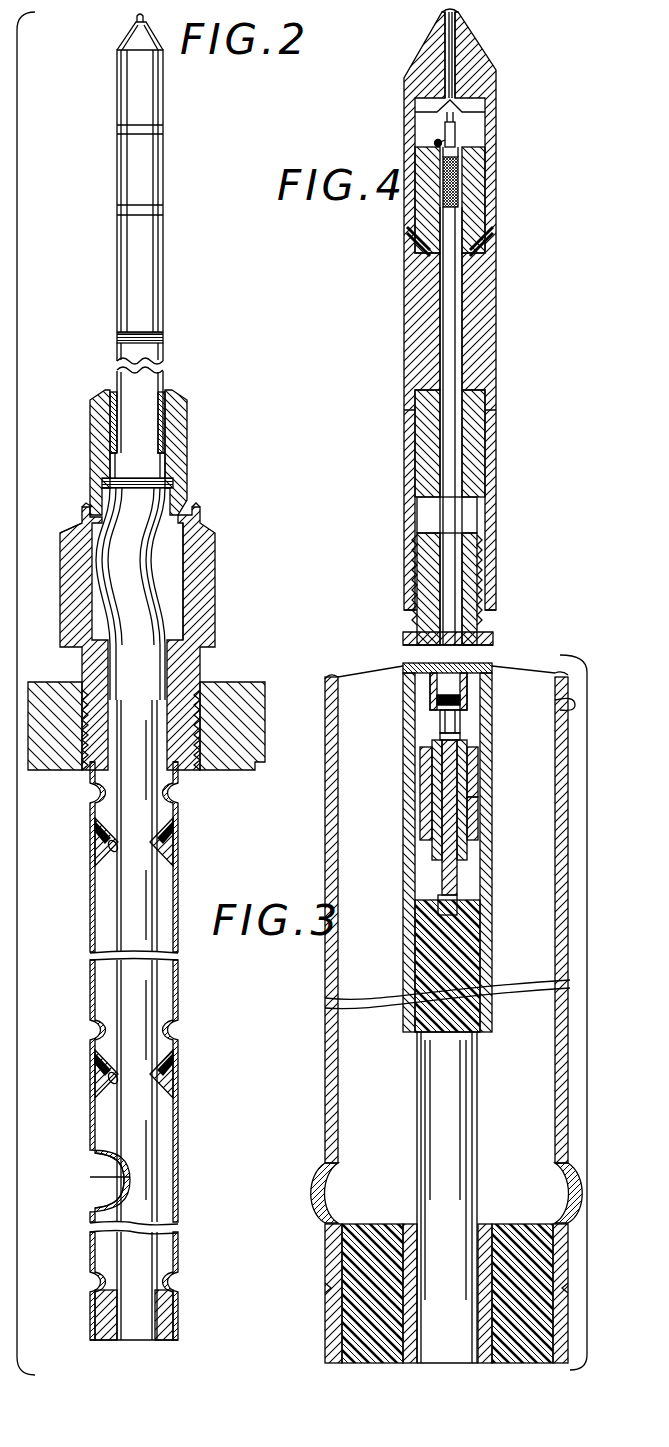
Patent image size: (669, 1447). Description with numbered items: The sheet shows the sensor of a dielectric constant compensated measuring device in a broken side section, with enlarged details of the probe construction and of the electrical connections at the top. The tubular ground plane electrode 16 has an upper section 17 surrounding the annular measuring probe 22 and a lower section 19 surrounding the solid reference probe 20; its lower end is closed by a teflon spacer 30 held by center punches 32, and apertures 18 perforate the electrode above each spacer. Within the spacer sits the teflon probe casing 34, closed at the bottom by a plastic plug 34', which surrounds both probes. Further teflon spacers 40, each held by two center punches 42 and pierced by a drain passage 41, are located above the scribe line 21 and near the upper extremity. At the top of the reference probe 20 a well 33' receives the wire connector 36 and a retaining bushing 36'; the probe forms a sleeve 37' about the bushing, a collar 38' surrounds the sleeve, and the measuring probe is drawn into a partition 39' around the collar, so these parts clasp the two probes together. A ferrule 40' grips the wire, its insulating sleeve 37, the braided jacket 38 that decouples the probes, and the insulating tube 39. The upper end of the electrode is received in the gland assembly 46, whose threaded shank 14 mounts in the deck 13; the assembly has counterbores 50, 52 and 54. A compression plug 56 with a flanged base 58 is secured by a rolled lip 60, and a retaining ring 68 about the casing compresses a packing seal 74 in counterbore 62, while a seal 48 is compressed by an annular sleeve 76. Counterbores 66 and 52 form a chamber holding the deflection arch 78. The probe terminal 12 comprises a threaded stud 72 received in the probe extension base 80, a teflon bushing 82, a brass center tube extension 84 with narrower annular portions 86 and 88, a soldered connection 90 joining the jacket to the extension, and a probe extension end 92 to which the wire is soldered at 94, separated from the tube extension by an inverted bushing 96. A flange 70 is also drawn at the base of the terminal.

In FIG. 2, the probe terminal 12 is at (178, 333).
In FIG. 4, the probe terminal 12 is at (533, 280).
In FIG. 2, the deck 13 is at (242, 681).
In FIG. 2, the externally threaded shank 14 is at (77, 681).
In FIG. 2, the ground plane electrode 16 is at (188, 996).
In FIG. 3, the ground plane electrode 16 is at (556, 657).
In FIG. 3, the upper section 17 is at (573, 700).
In FIG. 2, the apertures 18 is at (102, 793).
In FIG. 3, the apertures 18 is at (548, 1185).
In FIG. 2, the lower section 19 is at (90, 1247).
In FIG. 3, the reference probe 20 is at (483, 852).
In FIG. 2, the scribe line 21 is at (103, 1172).
In FIG. 4, the measuring probe 22 is at (496, 642).
In FIG. 3, the measuring probe 22 is at (403, 666).
In FIG. 3, the teflon spacer 30 is at (365, 1223).
In FIG. 3, the center punches 32 is at (557, 1283).
In FIG. 3, the well 33' is at (408, 897).
In FIG. 2, the outer insulating probe casing 34 is at (104, 1020).
In FIG. 3, the outer insulating probe casing 34 is at (447, 1052).
In FIG. 3, the plastic plug 34' is at (484, 1120).
In FIG. 4, the wire connector 36 is at (475, 107).
In FIG. 3, the wire connector 36 is at (412, 800).
In FIG. 3, the retaining bushing 36' is at (494, 814).
In FIG. 4, the insulating sleeve 37 is at (490, 134).
In FIG. 3, the insulating sleeve 37 is at (406, 723).
In FIG. 3, the sleeve 37' is at (504, 772).
In FIG. 4, the braided stainless steel jacket 38 is at (489, 177).
In FIG. 3, the braided stainless steel jacket 38 is at (486, 701).
In FIG. 3, the collar 38' is at (504, 818).
In FIG. 3, the insulating tube 39 is at (412, 691).
In FIG. 3, the partition 39' is at (397, 793).
In FIG. 2, the teflon spacer 40 is at (135, 964).
In FIG. 3, the ferrule 40' is at (495, 725).
In FIG. 2, the drain passage 41 is at (98, 860).
In FIG. 2, the center punches 42 is at (97, 833).
In FIG. 2, the gland assembly 46 is at (226, 623).
In FIG. 2, the seal 48 is at (207, 771).
In FIG. 2, the counterbore 50 is at (98, 784).
In FIG. 2, the counterbore 52 is at (173, 612).
In FIG. 2, the counterbore 54 is at (190, 548).
In FIG. 2, the compression plug 56 is at (92, 407).
In FIG. 2, the flanged base 58 is at (90, 541).
In FIG. 2, the lip 60 is at (193, 508).
In FIG. 2, the counterbore 62 is at (157, 424).
In FIG. 2, the counterbore 66 is at (88, 553).
In FIG. 2, the retaining ring 68 is at (120, 462).
In FIG. 4, the flange 70 is at (404, 637).
In FIG. 2, the stud 72 is at (115, 337).
In FIG. 4, the stud 72 is at (482, 617).
In FIG. 2, the packing seal 74 is at (165, 413).
In FIG. 2, the annular sleeve 76 is at (152, 673).
In FIG. 2, the deflection arch 78 is at (160, 586).
In FIG. 4, the probe extension base 80 is at (495, 518).
In FIG. 4, the teflon bushing 82 is at (495, 395).
In FIG. 4, the center tube extension 84 is at (497, 317).
In FIG. 4, the annular portion 86 is at (487, 443).
In FIG. 4, the annular portion 88 is at (483, 193).
In FIG. 4, the soldered connection 90 is at (436, 142).
In FIG. 2, the probe extension end 92 is at (124, 37).
In FIG. 4, the probe extension end 92 is at (481, 50).
In FIG. 2, the solder joint 94 is at (137, 19).
In FIG. 4, the solder joint 94 is at (458, 12).
In FIG. 4, the bushing 96 is at (495, 237).